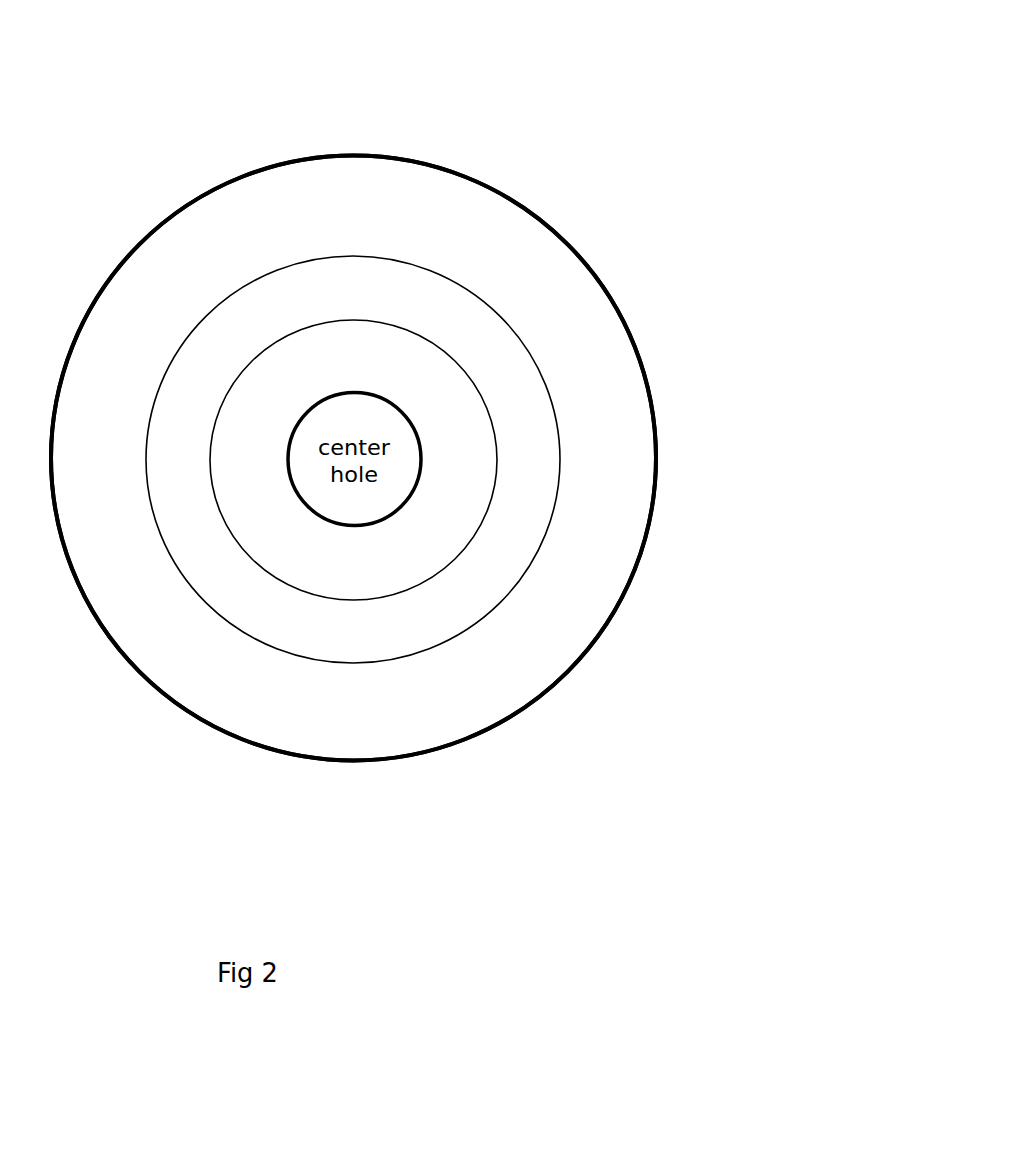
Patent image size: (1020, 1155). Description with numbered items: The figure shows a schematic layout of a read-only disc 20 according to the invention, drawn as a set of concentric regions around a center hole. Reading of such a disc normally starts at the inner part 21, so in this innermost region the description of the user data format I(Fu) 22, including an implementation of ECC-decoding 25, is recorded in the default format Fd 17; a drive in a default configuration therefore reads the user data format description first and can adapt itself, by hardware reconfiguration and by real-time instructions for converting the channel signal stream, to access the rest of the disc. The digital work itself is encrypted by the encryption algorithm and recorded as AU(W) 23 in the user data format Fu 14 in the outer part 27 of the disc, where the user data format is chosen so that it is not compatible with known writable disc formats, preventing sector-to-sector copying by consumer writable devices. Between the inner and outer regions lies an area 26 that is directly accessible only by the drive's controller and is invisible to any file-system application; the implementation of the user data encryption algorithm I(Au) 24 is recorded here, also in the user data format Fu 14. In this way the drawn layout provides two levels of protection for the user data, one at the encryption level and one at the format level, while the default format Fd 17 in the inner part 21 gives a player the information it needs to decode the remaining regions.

The read-only disc 20 is at (773, 63).
The inner part of the disc 21 is at (297, 572).
The description of the user data format I(Fu) 22 is at (344, 363).
The encrypted user data AU(W) 23 is at (354, 227).
The implementation of the user data encryption algorithm I(Au) 24 is at (349, 292).
The implementation of ECC-decoding 25 is at (343, 543).
The controller-accessible area 26 is at (323, 637).
The outer part of the disc 27 is at (432, 693).
The user data format Fu 14 is at (510, 260).
The default format Fd 17 is at (448, 529).